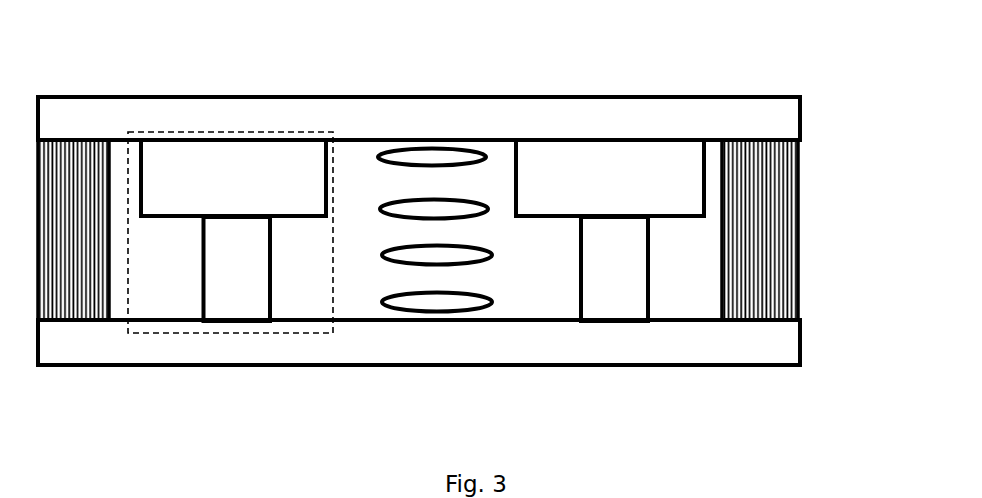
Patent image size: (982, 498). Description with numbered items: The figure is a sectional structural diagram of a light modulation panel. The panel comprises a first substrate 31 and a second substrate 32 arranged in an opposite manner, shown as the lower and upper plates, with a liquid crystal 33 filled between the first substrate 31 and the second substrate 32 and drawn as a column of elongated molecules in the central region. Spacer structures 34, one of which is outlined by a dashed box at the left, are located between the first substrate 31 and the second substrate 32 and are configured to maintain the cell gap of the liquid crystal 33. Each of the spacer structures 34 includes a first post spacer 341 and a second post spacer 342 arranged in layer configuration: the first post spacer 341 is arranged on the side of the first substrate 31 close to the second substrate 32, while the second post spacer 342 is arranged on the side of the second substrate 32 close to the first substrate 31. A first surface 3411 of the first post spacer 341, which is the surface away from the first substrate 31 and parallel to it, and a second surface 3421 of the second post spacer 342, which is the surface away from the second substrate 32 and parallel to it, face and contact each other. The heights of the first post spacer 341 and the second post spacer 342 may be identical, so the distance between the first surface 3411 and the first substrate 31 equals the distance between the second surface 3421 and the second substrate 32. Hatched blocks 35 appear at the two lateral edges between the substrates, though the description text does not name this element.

The first substrate 31 is at (706, 343).
The second substrate 32 is at (711, 116).
The liquid crystal 33 is at (441, 255).
The spacer structures 34 is at (322, 333).
The first post spacer 341 is at (247, 321).
The second post spacer 342 is at (171, 216).
The first surface 3411 is at (615, 217).
The second surface 3421 is at (669, 212).
The sealant 35 is at (755, 249).